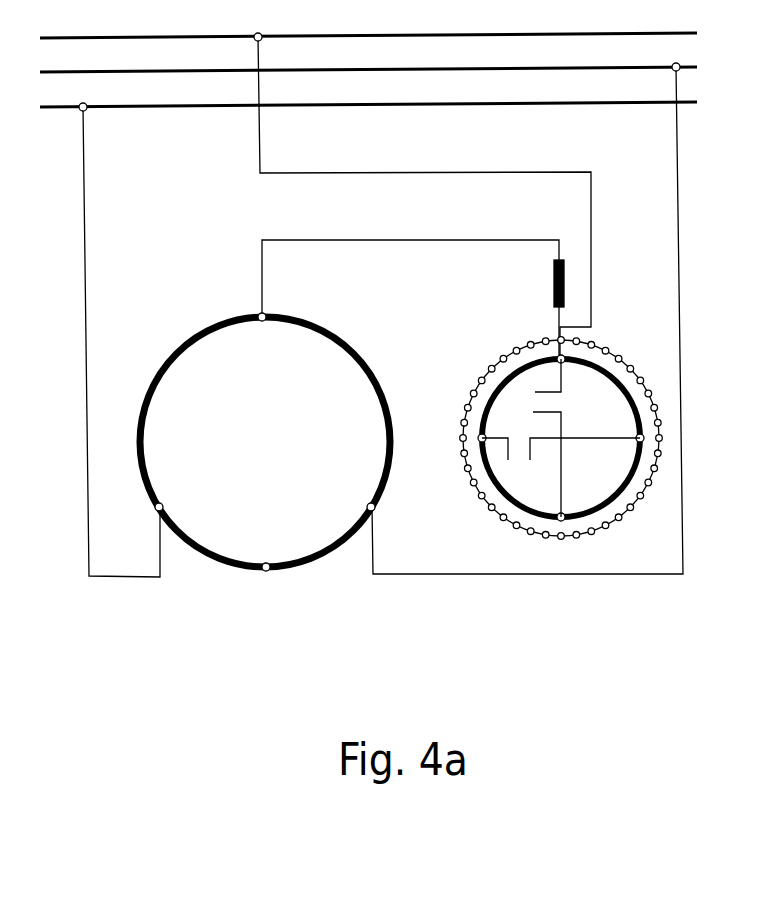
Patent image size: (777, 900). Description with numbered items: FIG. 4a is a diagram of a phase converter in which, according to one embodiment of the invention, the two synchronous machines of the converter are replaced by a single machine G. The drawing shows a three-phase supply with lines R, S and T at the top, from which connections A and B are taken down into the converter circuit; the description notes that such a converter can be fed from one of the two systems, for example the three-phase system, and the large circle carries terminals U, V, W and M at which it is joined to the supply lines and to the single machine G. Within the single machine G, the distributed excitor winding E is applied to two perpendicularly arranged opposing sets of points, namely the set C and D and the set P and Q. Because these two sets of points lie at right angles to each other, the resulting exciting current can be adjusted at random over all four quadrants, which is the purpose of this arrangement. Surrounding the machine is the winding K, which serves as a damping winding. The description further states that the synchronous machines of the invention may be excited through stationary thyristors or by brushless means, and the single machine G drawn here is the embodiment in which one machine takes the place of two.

The supply phase line R is at (352, 40).
The supply phase line S is at (352, 74).
The supply phase line T is at (352, 108).
The connecting line A is at (424, 197).
The connecting line B with resistor B is at (413, 299).
The motor terminal U is at (249, 296).
The motor terminal V is at (525, 320).
The motor terminal W is at (123, 342).
The motor terminal M is at (267, 590).
The single machine G is at (561, 438).
The damping winding K is at (629, 365).
The distributed excitor winding E is at (492, 385).
The point of excitor winding C is at (537, 382).
The point of excitor winding D is at (537, 458).
The point of excitor winding P is at (500, 467).
The point of excitor winding Q is at (580, 467).